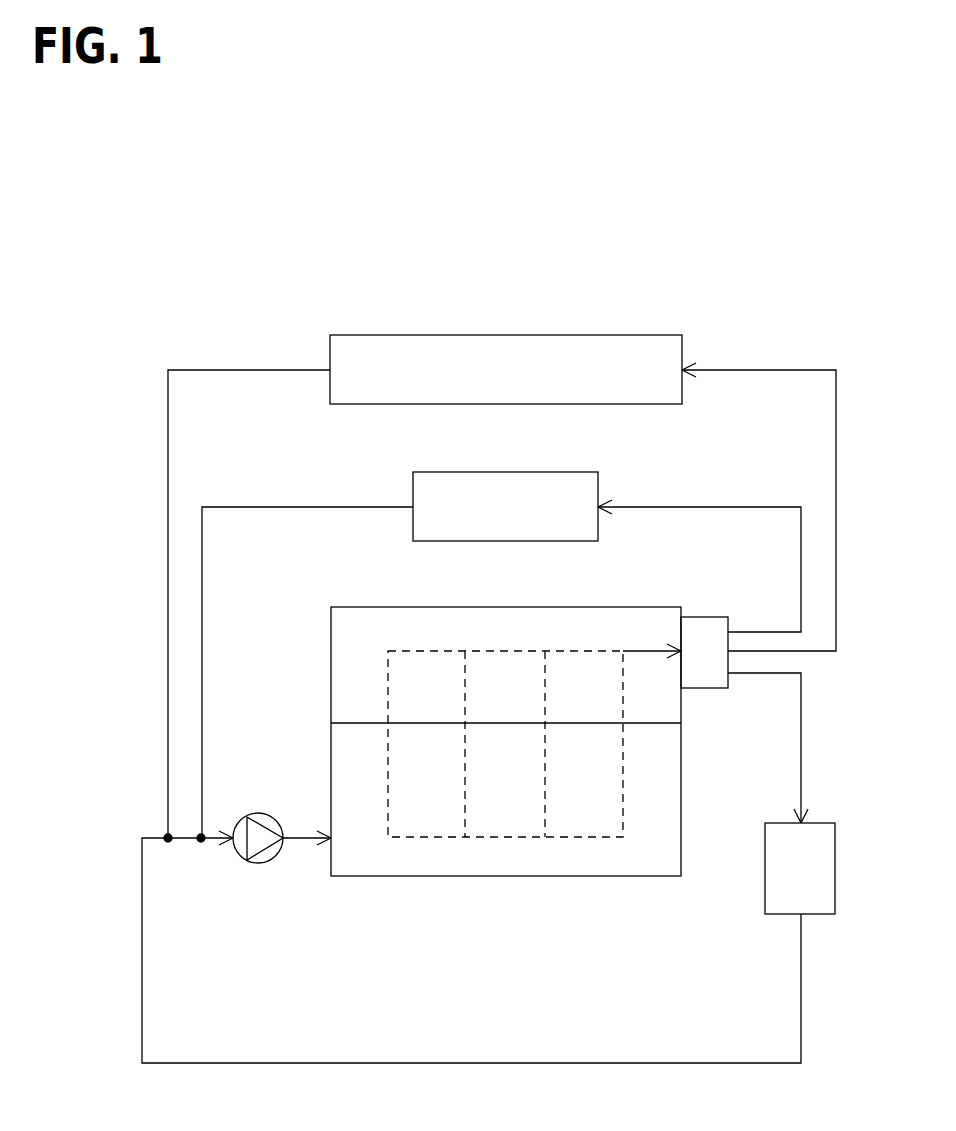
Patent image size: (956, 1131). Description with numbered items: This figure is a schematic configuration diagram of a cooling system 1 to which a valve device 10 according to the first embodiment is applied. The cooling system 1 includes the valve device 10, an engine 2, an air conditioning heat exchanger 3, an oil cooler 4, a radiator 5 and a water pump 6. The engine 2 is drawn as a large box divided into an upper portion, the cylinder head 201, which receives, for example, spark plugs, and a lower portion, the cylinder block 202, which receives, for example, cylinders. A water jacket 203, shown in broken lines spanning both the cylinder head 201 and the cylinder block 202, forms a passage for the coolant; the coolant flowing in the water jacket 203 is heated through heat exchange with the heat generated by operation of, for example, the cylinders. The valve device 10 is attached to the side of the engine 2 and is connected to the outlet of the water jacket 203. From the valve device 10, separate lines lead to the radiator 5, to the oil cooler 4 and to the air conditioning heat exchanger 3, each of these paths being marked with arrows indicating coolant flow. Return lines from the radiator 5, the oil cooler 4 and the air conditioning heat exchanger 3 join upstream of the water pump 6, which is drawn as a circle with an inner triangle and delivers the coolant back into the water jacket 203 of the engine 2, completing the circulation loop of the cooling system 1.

The cooling system 1 is at (786, 340).
The engine 2 is at (463, 786).
The cylinder head 201 is at (352, 655).
The cylinder block 202 is at (352, 763).
The water jacket 203 is at (425, 840).
The air conditioning heat exchanger 3 is at (775, 897).
The oil cooler 4 is at (554, 515).
The radiator 5 is at (377, 385).
The water pump 6 is at (272, 852).
The valve device 10 is at (710, 675).